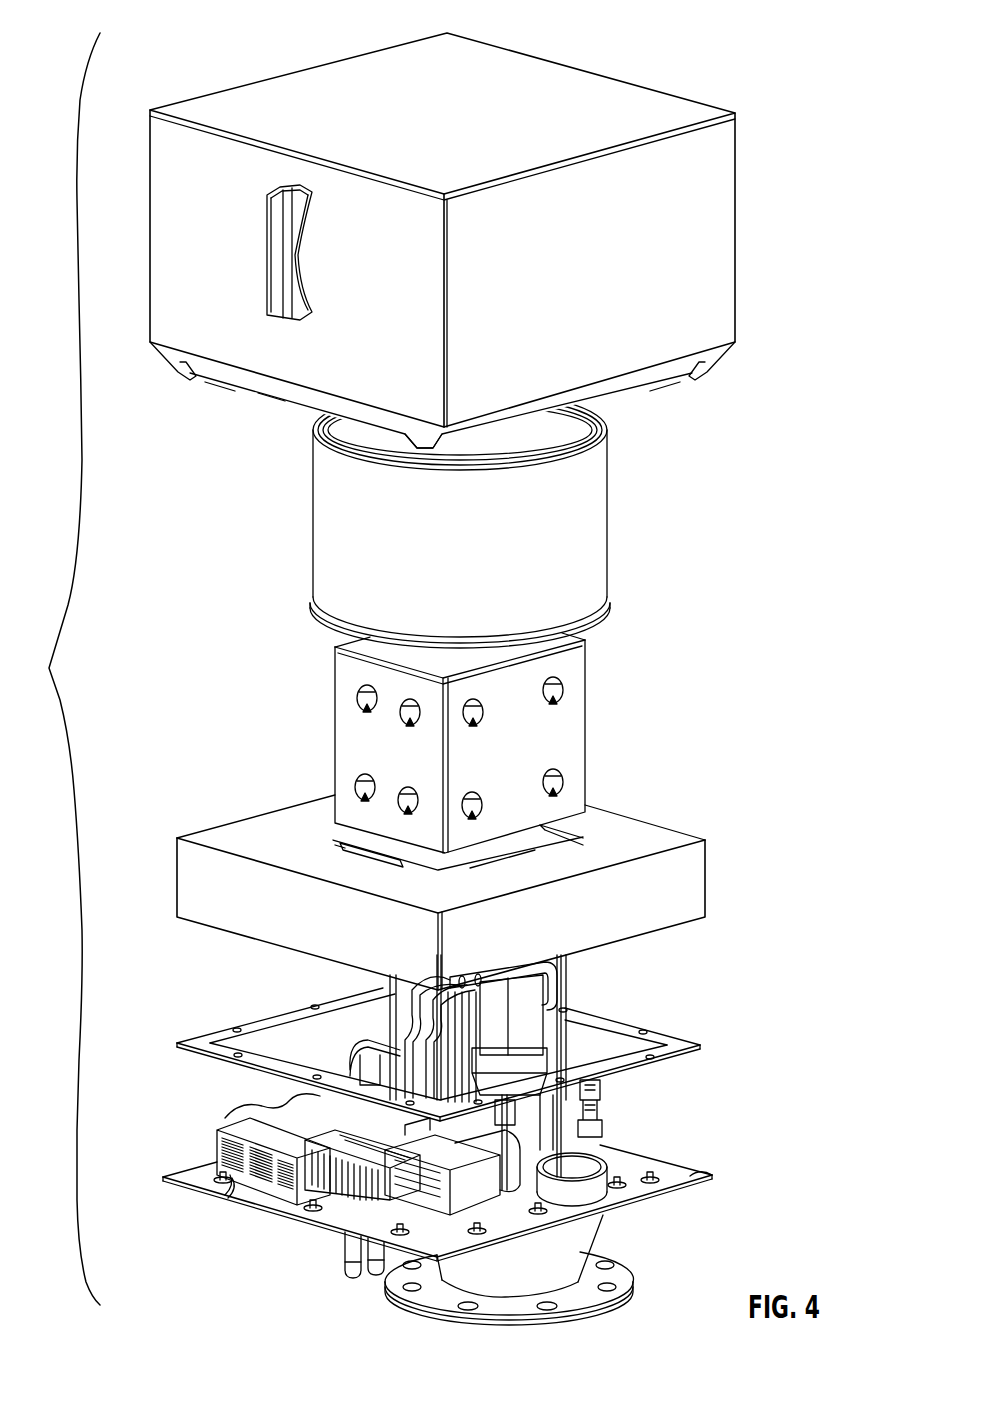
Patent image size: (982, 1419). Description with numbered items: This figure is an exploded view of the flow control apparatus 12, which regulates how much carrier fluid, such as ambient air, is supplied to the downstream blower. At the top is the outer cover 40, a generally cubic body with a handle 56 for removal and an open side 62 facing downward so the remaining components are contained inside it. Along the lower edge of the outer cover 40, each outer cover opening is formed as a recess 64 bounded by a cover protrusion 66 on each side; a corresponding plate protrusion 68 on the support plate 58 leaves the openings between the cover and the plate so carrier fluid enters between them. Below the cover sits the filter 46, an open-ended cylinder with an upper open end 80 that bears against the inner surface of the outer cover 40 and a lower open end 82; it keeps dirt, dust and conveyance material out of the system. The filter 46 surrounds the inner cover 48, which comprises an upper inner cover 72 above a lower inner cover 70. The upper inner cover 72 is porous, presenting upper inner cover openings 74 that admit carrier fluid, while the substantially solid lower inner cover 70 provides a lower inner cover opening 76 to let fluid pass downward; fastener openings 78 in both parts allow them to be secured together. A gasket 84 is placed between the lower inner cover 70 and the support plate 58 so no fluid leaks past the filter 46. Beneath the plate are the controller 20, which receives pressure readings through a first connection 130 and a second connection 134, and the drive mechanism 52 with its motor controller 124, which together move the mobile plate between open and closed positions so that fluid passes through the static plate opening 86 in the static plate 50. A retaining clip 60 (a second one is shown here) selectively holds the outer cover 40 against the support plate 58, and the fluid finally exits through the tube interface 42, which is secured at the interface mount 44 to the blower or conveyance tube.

The flow control apparatus 12 is at (202, 52).
The outer cover 40 is at (578, 84).
The handle 56 is at (268, 252).
The cover protrusion 66 is at (170, 372).
The recess 64 is at (229, 388).
The open side 62 is at (269, 418).
The upper open end 80 is at (570, 426).
The filter 46 is at (496, 517).
The lower open end 82 is at (618, 614).
The upper inner cover 72 is at (487, 743).
The upper inner cover opening 74 is at (410, 716).
The inner cover 48 is at (512, 811).
The lower inner cover 70 is at (447, 877).
The fastener openings 78 is at (357, 843).
The lower inner cover opening 76 is at (538, 840).
The gasket 84 is at (268, 1023).
The motor controller 124 is at (383, 997).
The drive mechanism 52 is at (530, 1003).
The controller 20 is at (432, 1140).
The retaining clip 60 is at (608, 1100).
The static plate opening 86 is at (585, 1167).
The static plate 50 is at (637, 1167).
The plate protrusion 68 is at (697, 1173).
The support plate 58 is at (650, 1193).
The second connection 134 is at (347, 1263).
The first connection 130 is at (380, 1270).
The tube interface 42 is at (572, 1269).
The interface mount 44 is at (625, 1273).